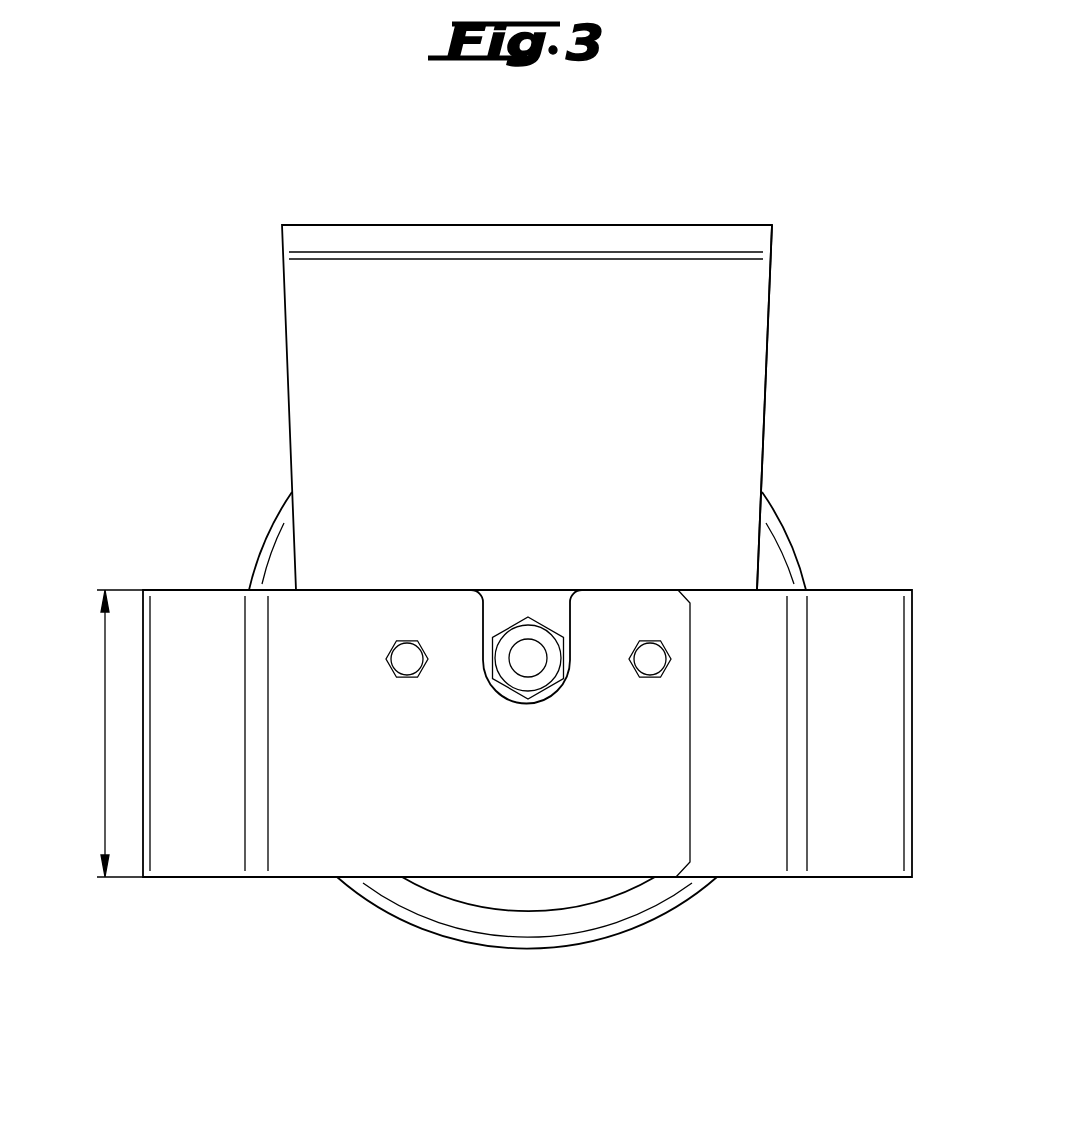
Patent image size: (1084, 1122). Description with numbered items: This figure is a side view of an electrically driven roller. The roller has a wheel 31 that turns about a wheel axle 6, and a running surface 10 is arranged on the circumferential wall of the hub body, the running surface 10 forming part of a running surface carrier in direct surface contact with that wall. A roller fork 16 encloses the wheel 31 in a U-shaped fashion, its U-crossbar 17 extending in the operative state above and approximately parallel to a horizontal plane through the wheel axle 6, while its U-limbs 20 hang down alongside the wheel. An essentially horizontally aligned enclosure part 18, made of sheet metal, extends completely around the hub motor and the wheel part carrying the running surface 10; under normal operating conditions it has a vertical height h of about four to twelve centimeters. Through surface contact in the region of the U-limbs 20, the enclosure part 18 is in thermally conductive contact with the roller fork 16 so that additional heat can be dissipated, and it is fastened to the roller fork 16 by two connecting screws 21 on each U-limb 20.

The wheel axle 6 is at (527, 656).
The running surface 10 is at (693, 900).
The roller fork 16 is at (737, 397).
The U-crossbar 17 is at (548, 225).
The enclosure part 18 is at (861, 633).
The U-limb 20 is at (712, 317).
The connecting screws 21 is at (407, 659).
The wheel 31 is at (790, 530).